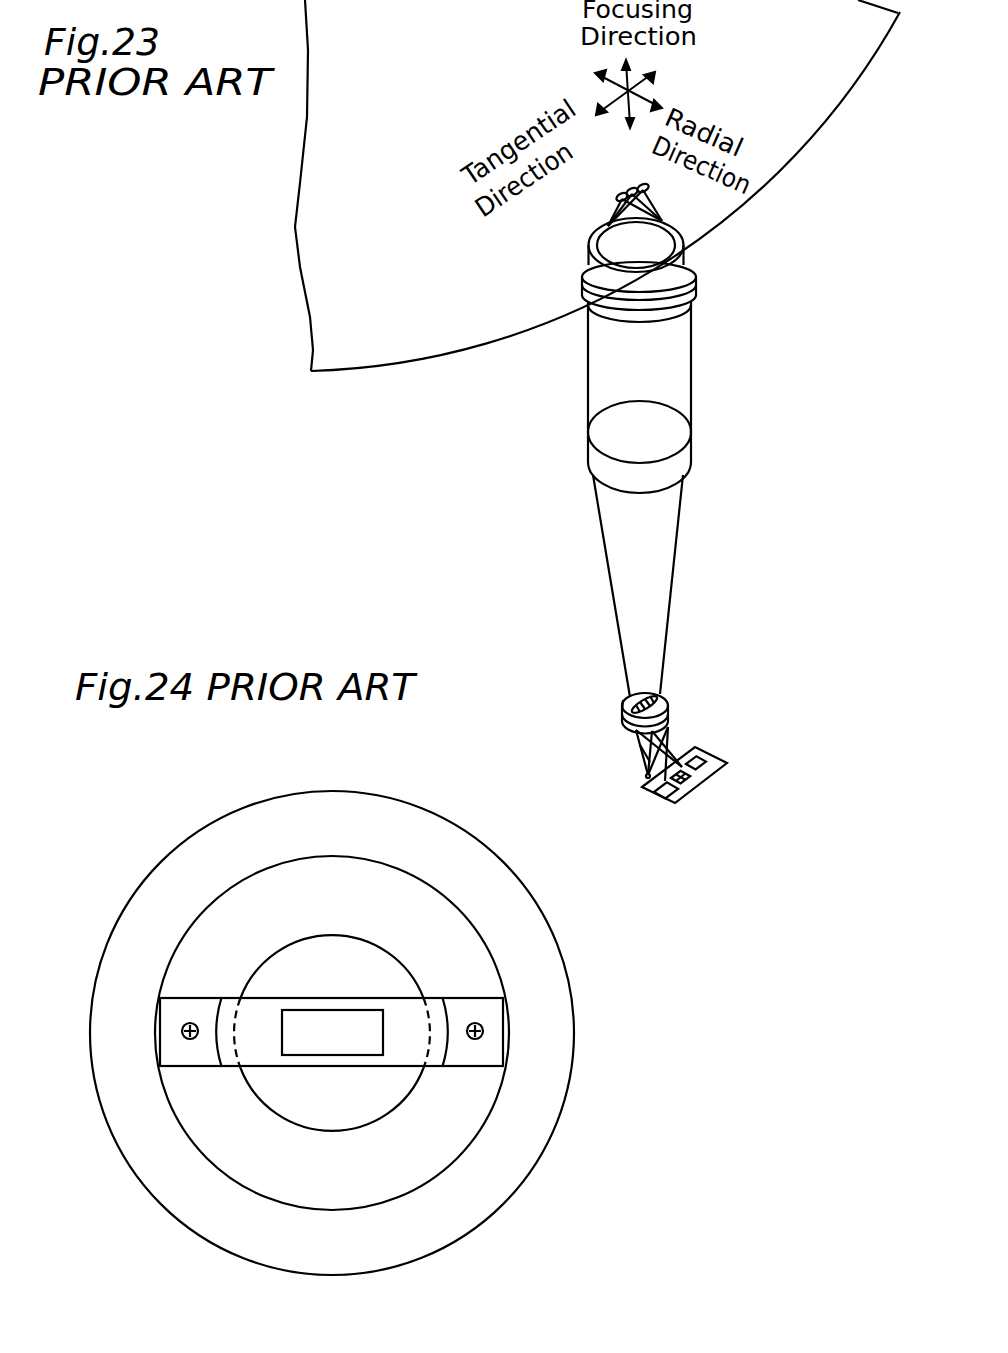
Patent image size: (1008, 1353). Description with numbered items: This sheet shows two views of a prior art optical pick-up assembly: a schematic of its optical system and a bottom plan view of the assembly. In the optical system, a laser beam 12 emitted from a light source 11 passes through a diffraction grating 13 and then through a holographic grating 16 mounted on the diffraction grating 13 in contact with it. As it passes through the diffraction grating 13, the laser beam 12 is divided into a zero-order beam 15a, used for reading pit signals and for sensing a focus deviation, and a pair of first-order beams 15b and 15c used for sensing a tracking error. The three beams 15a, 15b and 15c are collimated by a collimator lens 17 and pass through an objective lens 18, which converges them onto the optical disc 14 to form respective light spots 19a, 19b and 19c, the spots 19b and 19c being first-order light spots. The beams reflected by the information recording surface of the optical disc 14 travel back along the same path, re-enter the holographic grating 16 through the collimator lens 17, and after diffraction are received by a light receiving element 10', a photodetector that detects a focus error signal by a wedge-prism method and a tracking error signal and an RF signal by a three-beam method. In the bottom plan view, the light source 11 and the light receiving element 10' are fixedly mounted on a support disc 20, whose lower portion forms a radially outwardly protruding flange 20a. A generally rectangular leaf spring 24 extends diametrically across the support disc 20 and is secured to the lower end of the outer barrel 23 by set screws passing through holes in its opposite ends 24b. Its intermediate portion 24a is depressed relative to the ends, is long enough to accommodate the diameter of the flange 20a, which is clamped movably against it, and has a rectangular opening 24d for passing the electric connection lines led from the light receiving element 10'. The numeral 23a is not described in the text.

In FIG. 23, the optical disc 14 is at (786, 142).
In FIG. 23, the objective lens 18 is at (696, 268).
In FIG. 23, the collimator lens 17 is at (648, 434).
In FIG. 23, the light spot 19a is at (621, 195).
In FIG. 23, the light spot 19b is at (630, 192).
In FIG. 23, the light spot 19c is at (645, 186).
In FIG. 23, the holographic grating 16 is at (669, 703).
In FIG. 24, the holographic grating 16 is at (188, 1022).
In FIG. 23, the zero-order beam 15a is at (667, 719).
In FIG. 23, the first-order beam 15b is at (621, 714).
In FIG. 23, the first-order beam 15c is at (661, 696).
In FIG. 23, the diffraction grating 13 is at (672, 731).
In FIG. 23, the laser beam 12 is at (644, 751).
In FIG. 23, the light source 11 is at (646, 776).
In FIG. 23, the light receiving element 10' is at (706, 779).
In FIG. 24, the outer barrel 23 is at (252, 804).
In FIG. 24, the outer ring surface 23a is at (352, 793).
In FIG. 24, the support disc 20 is at (350, 933).
In FIG. 24, the radially outwardly protruding flange 20a is at (372, 962).
In FIG. 24, the leaf spring 24 is at (458, 997).
In FIG. 24, the intermediate portion 24a is at (403, 1055).
In FIG. 24, the opposite ends 24b is at (188, 1055).
In FIG. 24, the rectangular opening 24d is at (316, 1046).